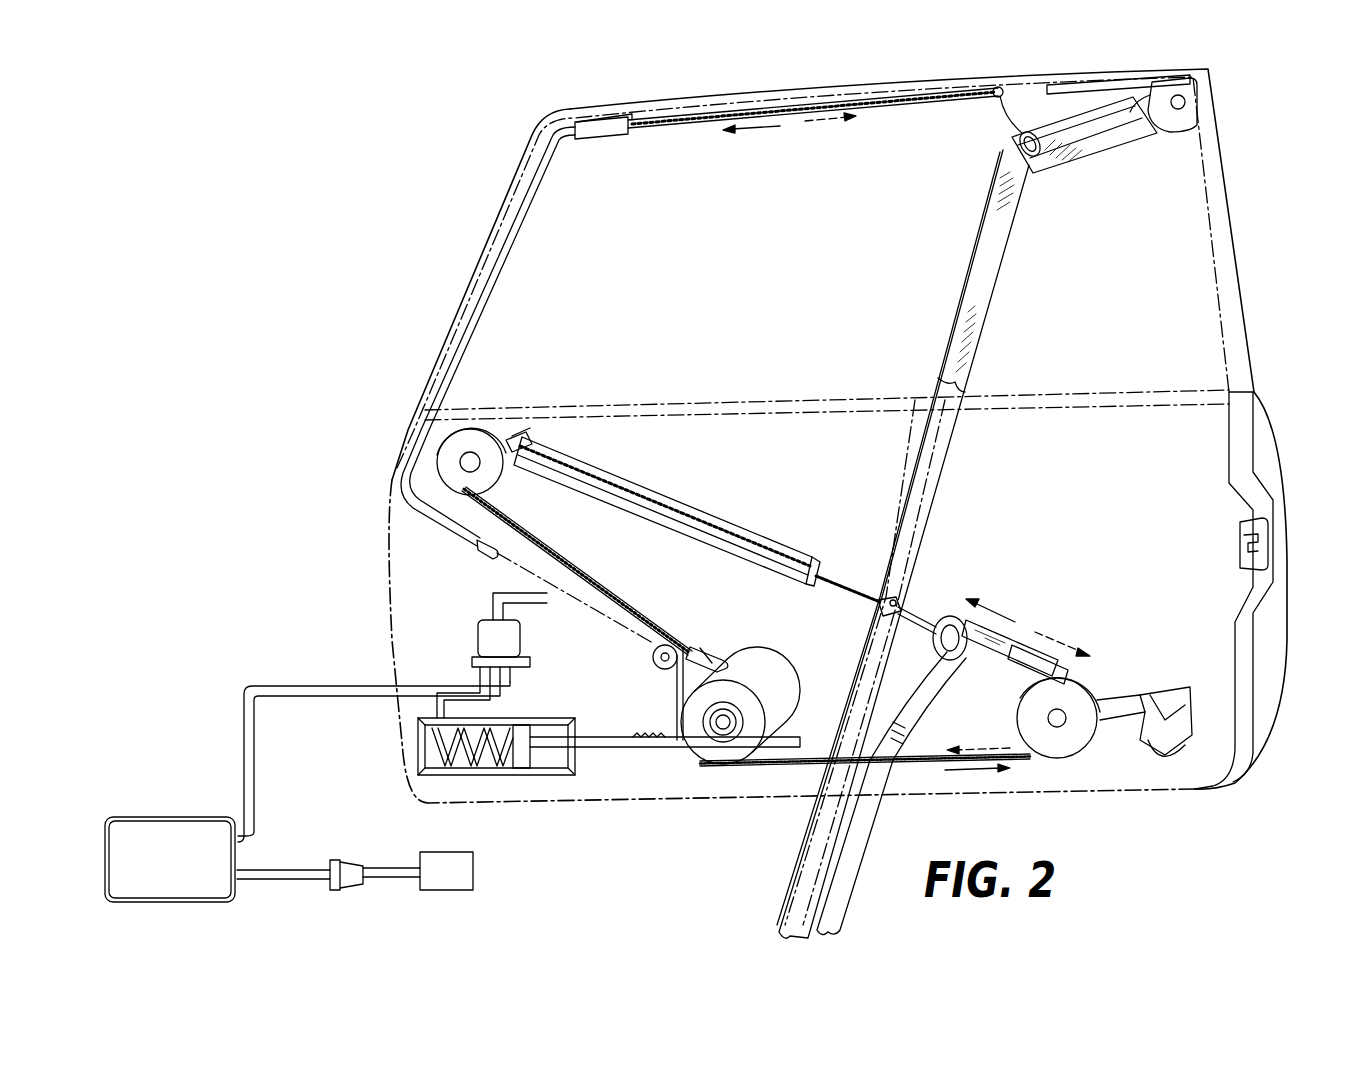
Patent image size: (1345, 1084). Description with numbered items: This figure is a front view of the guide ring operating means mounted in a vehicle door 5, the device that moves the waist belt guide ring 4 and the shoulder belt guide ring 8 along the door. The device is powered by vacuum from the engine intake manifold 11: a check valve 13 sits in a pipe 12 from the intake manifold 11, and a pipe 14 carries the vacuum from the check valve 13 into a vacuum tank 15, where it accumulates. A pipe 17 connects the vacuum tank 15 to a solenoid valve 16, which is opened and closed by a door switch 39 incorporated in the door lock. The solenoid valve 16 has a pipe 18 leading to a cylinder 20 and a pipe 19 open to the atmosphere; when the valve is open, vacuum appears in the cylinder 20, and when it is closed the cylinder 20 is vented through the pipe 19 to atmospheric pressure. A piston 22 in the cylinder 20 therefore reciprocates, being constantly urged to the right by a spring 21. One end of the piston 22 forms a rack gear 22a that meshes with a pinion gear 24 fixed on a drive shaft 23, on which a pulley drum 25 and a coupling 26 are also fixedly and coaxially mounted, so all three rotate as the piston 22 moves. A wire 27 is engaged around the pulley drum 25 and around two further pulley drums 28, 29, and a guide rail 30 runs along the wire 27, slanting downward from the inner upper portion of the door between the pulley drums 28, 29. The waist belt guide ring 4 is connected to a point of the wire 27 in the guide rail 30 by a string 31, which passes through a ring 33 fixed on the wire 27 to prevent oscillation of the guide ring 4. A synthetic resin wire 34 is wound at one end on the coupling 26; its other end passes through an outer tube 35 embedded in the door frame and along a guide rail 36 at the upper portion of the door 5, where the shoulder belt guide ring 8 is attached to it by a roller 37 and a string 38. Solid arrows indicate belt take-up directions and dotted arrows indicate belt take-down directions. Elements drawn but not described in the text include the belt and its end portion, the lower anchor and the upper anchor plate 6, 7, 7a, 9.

The waist belt guide ring 4 is at (947, 616).
The door 5 is at (1257, 393).
The lower belt anchor fitting 6 is at (1152, 758).
The seat belt 7 is at (988, 305).
The belt end portion 7a is at (1098, 150).
The shoulder belt guide ring 8 is at (1020, 141).
The upper anchor plate 9 is at (1143, 88).
The intake manifold 11 is at (474, 872).
The pipe 12 is at (398, 878).
The check valve 13 is at (350, 860).
The pipe 14 is at (285, 880).
The vacuum tank 15 is at (160, 818).
The solenoid valve 16 is at (522, 637).
The pipe 17 is at (257, 760).
The pipe 18 is at (492, 699).
The pipe 19 is at (514, 674).
The cylinder 20 is at (505, 773).
The spring 21 is at (442, 768).
The piston 22 is at (594, 749).
The rack gear 22a is at (650, 733).
The drive shaft 23 is at (722, 732).
The pinion gear 24 is at (706, 728).
The pulley drum 25 is at (780, 700).
The coupling 26 is at (752, 650).
The wire 27 is at (558, 567).
The pulley drum 28 is at (470, 436).
The pulley drum 29 is at (1078, 752).
The guide rail 30 is at (705, 516).
The string 31 is at (917, 638).
The ring 33 is at (885, 597).
The wire 34 is at (490, 557).
The outer tube 35 is at (404, 493).
The guide rail 36 is at (597, 122).
The roller 37 is at (994, 88).
The string 38 is at (1003, 116).
The door switch 39 is at (1268, 548).